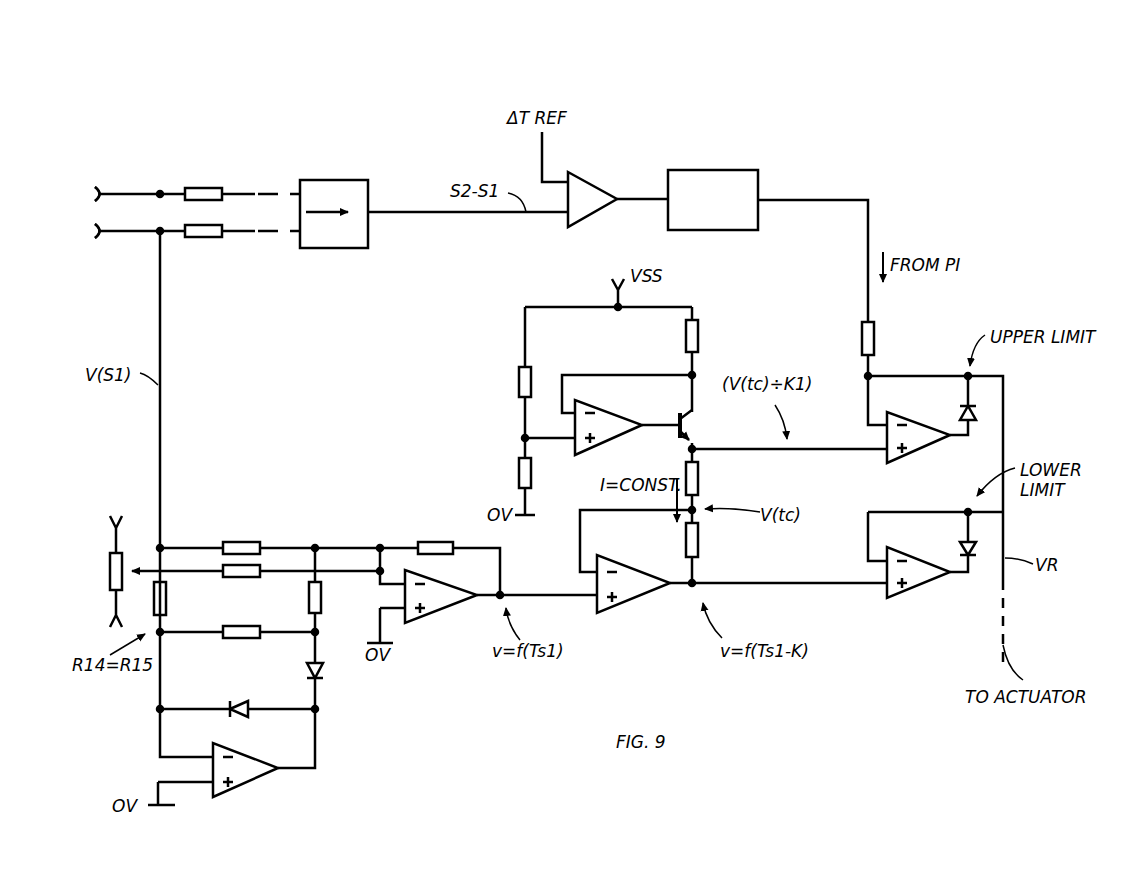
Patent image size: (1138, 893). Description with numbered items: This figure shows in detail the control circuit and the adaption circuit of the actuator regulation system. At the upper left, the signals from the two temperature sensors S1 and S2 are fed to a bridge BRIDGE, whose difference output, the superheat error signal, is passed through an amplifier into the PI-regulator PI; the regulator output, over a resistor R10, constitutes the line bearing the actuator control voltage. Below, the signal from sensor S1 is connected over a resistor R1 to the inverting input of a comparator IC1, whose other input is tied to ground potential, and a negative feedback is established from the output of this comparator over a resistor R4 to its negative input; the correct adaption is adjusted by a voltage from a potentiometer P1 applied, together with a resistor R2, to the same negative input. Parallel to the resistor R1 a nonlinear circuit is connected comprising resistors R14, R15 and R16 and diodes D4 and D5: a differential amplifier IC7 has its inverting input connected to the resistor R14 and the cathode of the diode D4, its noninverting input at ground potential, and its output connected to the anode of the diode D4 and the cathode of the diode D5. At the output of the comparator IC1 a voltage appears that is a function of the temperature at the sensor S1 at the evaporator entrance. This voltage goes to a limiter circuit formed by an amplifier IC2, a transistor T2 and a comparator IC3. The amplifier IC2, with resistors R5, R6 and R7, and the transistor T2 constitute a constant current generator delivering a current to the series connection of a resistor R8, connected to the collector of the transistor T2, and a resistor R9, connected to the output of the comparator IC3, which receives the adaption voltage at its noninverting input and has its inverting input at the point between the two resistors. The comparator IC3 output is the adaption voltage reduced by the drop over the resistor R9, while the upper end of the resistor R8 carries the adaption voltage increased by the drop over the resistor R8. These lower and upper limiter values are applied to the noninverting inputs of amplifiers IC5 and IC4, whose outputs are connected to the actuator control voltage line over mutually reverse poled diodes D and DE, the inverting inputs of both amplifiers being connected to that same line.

The sensor S1 is at (142, 232).
The sensor S2 is at (142, 194).
The bridge BRIDGE is at (329, 201).
The PI-regulator PI is at (663, 187).
The resistor R1 is at (241, 536).
The resistor R2 is at (241, 583).
The resistor R4 is at (435, 537).
The resistor R5 is at (510, 382).
The resistor R6 is at (509, 473).
The resistor R7 is at (674, 336).
The resistor R8 is at (705, 478).
The resistor R9 is at (707, 540).
The resistor R10 is at (887, 338).
The resistor R14 is at (178, 598).
The resistor R15 is at (241, 643).
The resistor R16 is at (334, 597).
The potentiometer P1 is at (120, 571).
The diode D is at (976, 400).
The diode DE is at (952, 533).
The diode D4 is at (237, 698).
The diode D5 is at (328, 667).
The transistor T2 is at (700, 425).
The comparator IC1 is at (441, 603).
The amplifier IC2 is at (627, 433).
The comparator IC3 is at (633, 590).
The amplifier IC4 is at (927, 441).
The amplifier IC5 is at (927, 577).
The differential amplifier IC7 is at (245, 774).